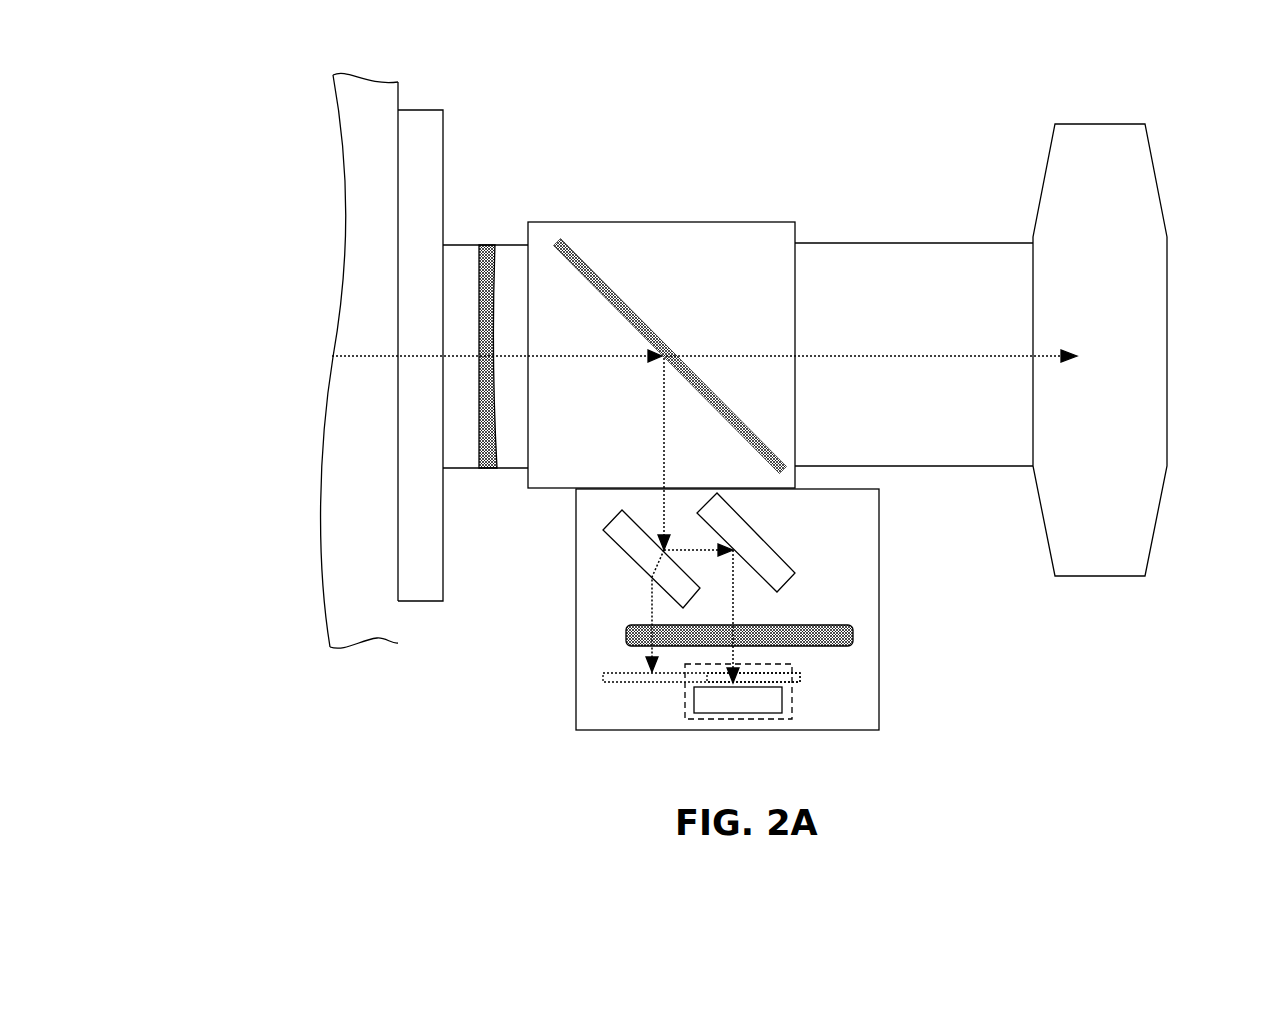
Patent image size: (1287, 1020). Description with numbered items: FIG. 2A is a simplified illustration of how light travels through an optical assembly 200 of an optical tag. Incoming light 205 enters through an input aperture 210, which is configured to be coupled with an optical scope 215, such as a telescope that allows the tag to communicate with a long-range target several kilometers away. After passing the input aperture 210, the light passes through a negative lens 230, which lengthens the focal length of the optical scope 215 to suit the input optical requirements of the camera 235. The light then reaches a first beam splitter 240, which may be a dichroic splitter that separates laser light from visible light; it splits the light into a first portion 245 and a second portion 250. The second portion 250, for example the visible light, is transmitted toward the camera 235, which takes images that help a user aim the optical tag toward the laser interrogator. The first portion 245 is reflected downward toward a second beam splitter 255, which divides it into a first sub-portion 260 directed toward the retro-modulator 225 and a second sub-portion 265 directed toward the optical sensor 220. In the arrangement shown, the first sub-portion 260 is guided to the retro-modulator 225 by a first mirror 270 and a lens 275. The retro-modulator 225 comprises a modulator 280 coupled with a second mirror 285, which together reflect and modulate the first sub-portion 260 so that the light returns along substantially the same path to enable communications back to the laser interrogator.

The optical assembly 200 is at (388, 791).
The incoming light 205 is at (352, 357).
The input aperture 210 is at (453, 277).
The optical scope 215 is at (385, 118).
The optical sensor 220 is at (632, 673).
The retro-modulator 225 is at (793, 713).
The negative lens 230 is at (492, 258).
The camera 235 is at (1146, 210).
The first beam splitter 240 is at (692, 292).
The first portion 245 is at (663, 428).
The second portion 250 is at (817, 354).
The second beam splitter 255 is at (623, 533).
The first sub-portion 260 is at (688, 550).
The second sub-portion 265 is at (653, 603).
The first mirror 270 is at (777, 577).
The lens 275 is at (838, 637).
The modulator 280 is at (703, 697).
The second mirror 285 is at (687, 697).